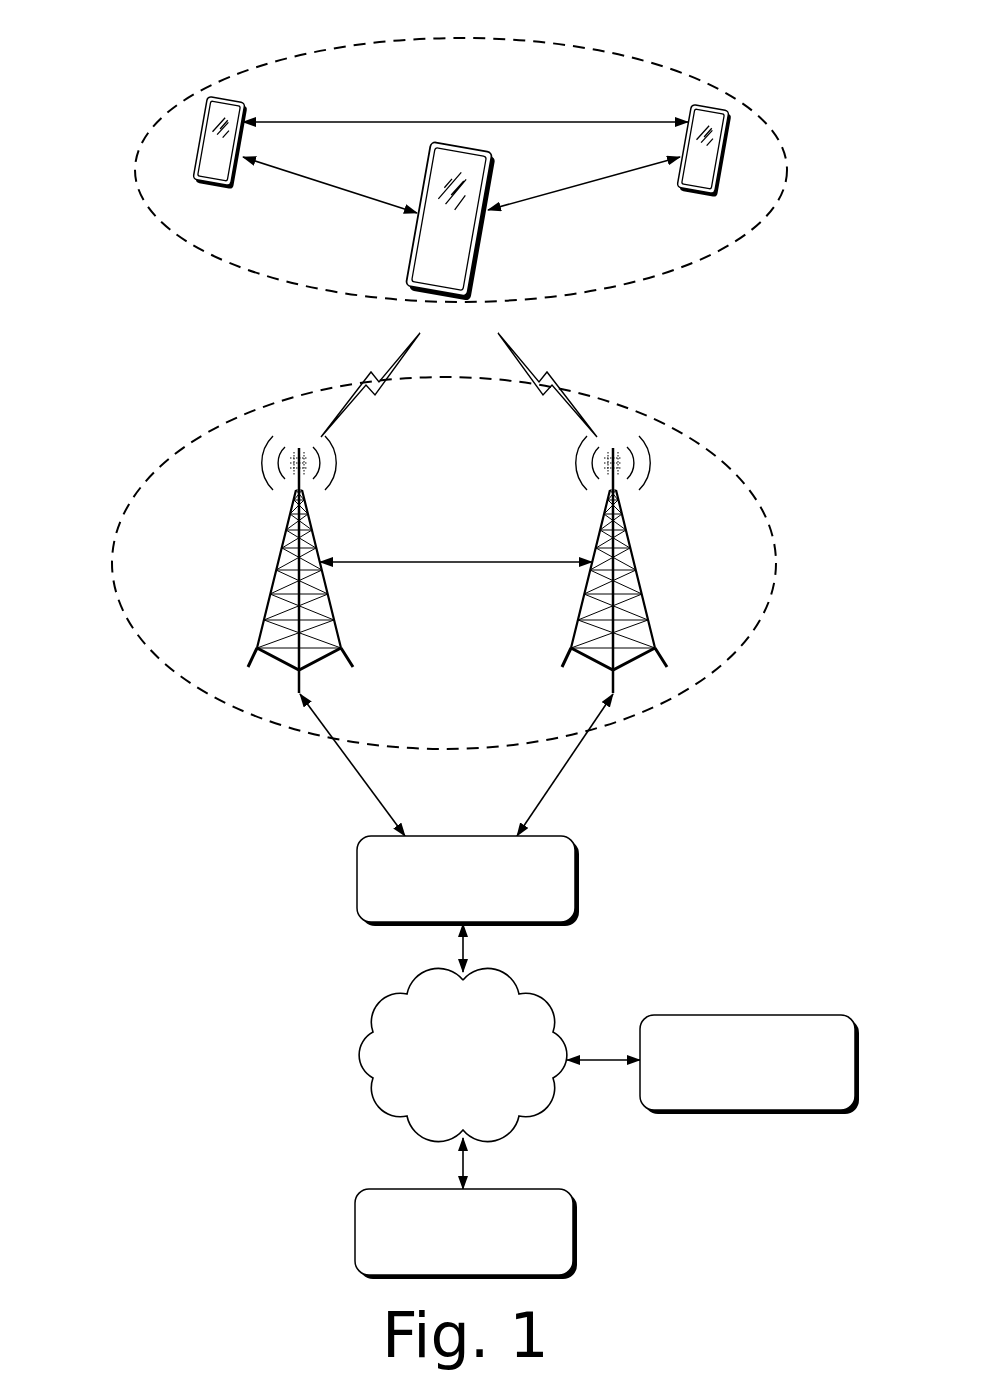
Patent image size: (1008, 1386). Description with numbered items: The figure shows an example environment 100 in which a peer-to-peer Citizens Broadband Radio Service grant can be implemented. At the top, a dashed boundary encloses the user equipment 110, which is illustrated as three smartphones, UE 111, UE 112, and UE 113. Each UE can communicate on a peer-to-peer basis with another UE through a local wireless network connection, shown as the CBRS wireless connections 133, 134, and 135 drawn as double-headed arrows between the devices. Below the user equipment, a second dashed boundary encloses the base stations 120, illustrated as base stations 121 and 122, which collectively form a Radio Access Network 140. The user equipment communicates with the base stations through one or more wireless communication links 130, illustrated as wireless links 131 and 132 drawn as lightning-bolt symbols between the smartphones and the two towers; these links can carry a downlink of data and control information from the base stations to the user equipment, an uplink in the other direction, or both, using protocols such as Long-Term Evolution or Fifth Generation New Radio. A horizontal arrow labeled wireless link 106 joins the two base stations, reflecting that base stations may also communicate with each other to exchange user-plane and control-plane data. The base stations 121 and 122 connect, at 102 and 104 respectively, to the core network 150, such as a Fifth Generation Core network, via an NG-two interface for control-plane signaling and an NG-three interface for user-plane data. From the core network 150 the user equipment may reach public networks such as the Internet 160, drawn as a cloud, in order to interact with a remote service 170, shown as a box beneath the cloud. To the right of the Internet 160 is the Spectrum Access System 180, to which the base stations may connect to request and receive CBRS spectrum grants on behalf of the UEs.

The example environment 100 is at (163, 35).
The connection of base station 121 to core network 102 is at (359, 788).
The connection of base station 122 to core network 104 is at (562, 788).
The wireless link 106 is at (423, 558).
The user equipment 110 is at (705, 82).
The UE 111 is at (484, 248).
The UE 112 is at (250, 100).
The UE 113 is at (690, 108).
The base stations 120 is at (457, 553).
The base station 121 is at (284, 543).
The base station 122 is at (629, 543).
The wireless communication links 130 is at (461, 374).
The wireless link 131 is at (375, 372).
The wireless link 132 is at (543, 373).
The CBRS wireless connection 133 is at (457, 122).
The CBRS wireless connection 134 is at (317, 178).
The CBRS wireless connection 135 is at (616, 168).
The Radio Access Network 140 is at (751, 490).
The core network 150 is at (468, 881).
The Internet 160 is at (463, 1054).
The remote service 170 is at (466, 1234).
The Spectrum Access System 180 is at (749, 1064).